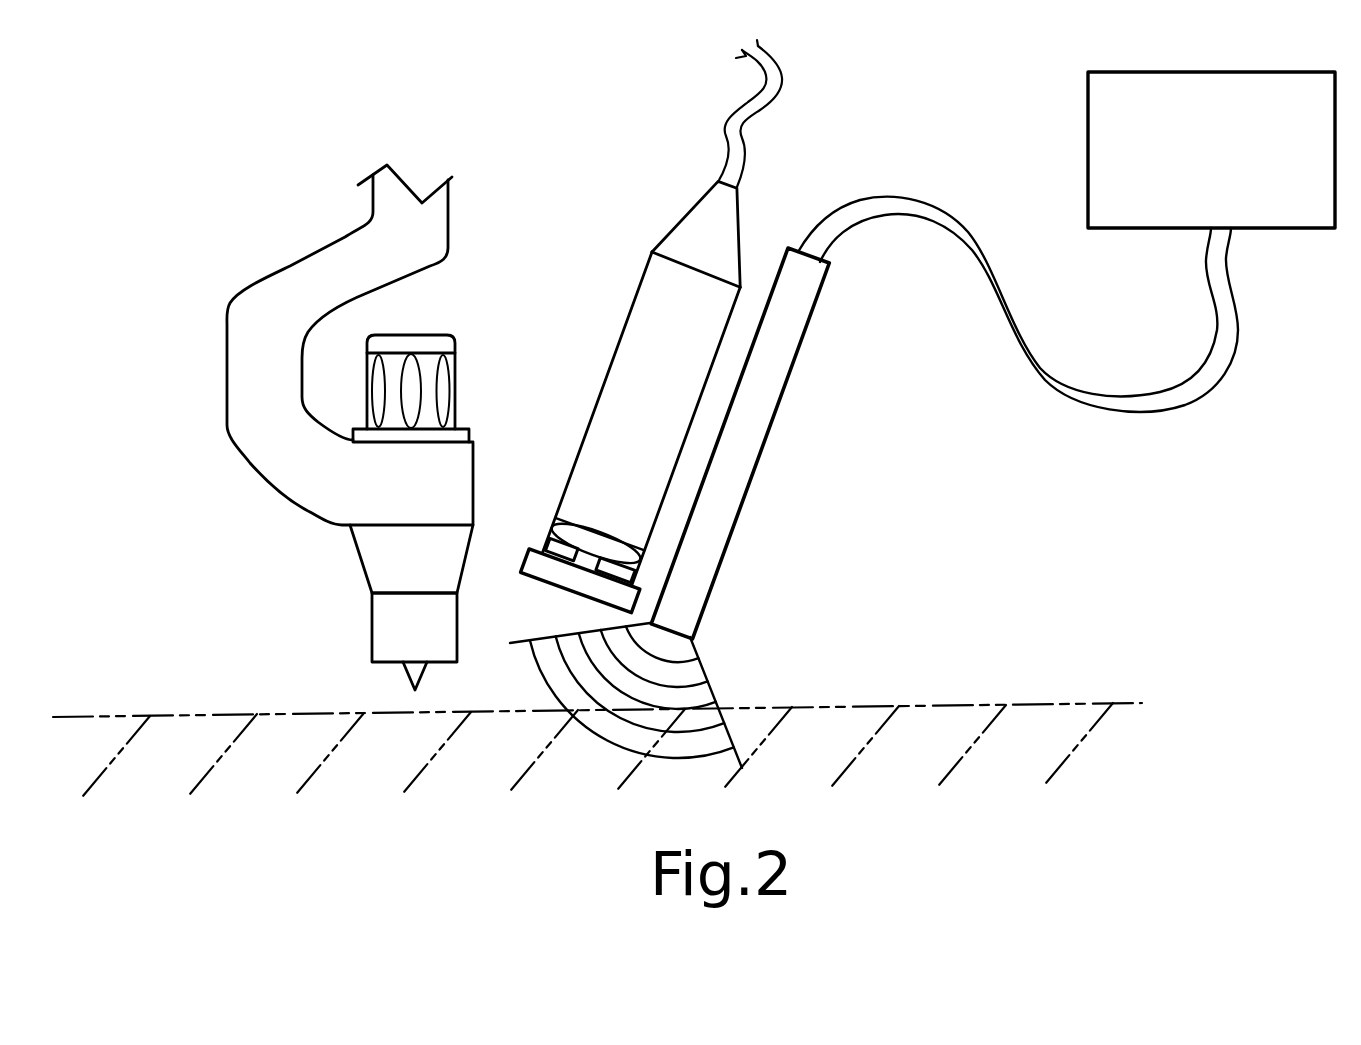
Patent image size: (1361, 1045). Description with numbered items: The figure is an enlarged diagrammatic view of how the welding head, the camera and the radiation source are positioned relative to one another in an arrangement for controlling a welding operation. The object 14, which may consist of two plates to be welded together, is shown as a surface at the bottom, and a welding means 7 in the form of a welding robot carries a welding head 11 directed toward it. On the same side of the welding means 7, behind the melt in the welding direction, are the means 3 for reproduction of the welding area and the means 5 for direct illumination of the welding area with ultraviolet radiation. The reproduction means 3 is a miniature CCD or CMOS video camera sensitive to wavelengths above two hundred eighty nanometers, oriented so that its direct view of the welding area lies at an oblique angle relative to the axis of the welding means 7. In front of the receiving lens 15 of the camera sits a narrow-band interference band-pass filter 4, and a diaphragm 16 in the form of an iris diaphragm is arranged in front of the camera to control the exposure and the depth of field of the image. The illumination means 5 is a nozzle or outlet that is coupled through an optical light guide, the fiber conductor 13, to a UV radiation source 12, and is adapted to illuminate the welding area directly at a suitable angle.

The means for reproduction of the welding area 3 is at (641, 307).
The band-pass filter 4 is at (555, 569).
The means for direct illumination 5 is at (781, 398).
The welding means 7 is at (410, 508).
The welding head 11 is at (338, 631).
The UV radiation source 12 is at (1103, 146).
The fiber conductor 13 is at (1176, 405).
The object 14 is at (1023, 718).
The lens 15 is at (560, 517).
The diaphragm 16 is at (543, 540).